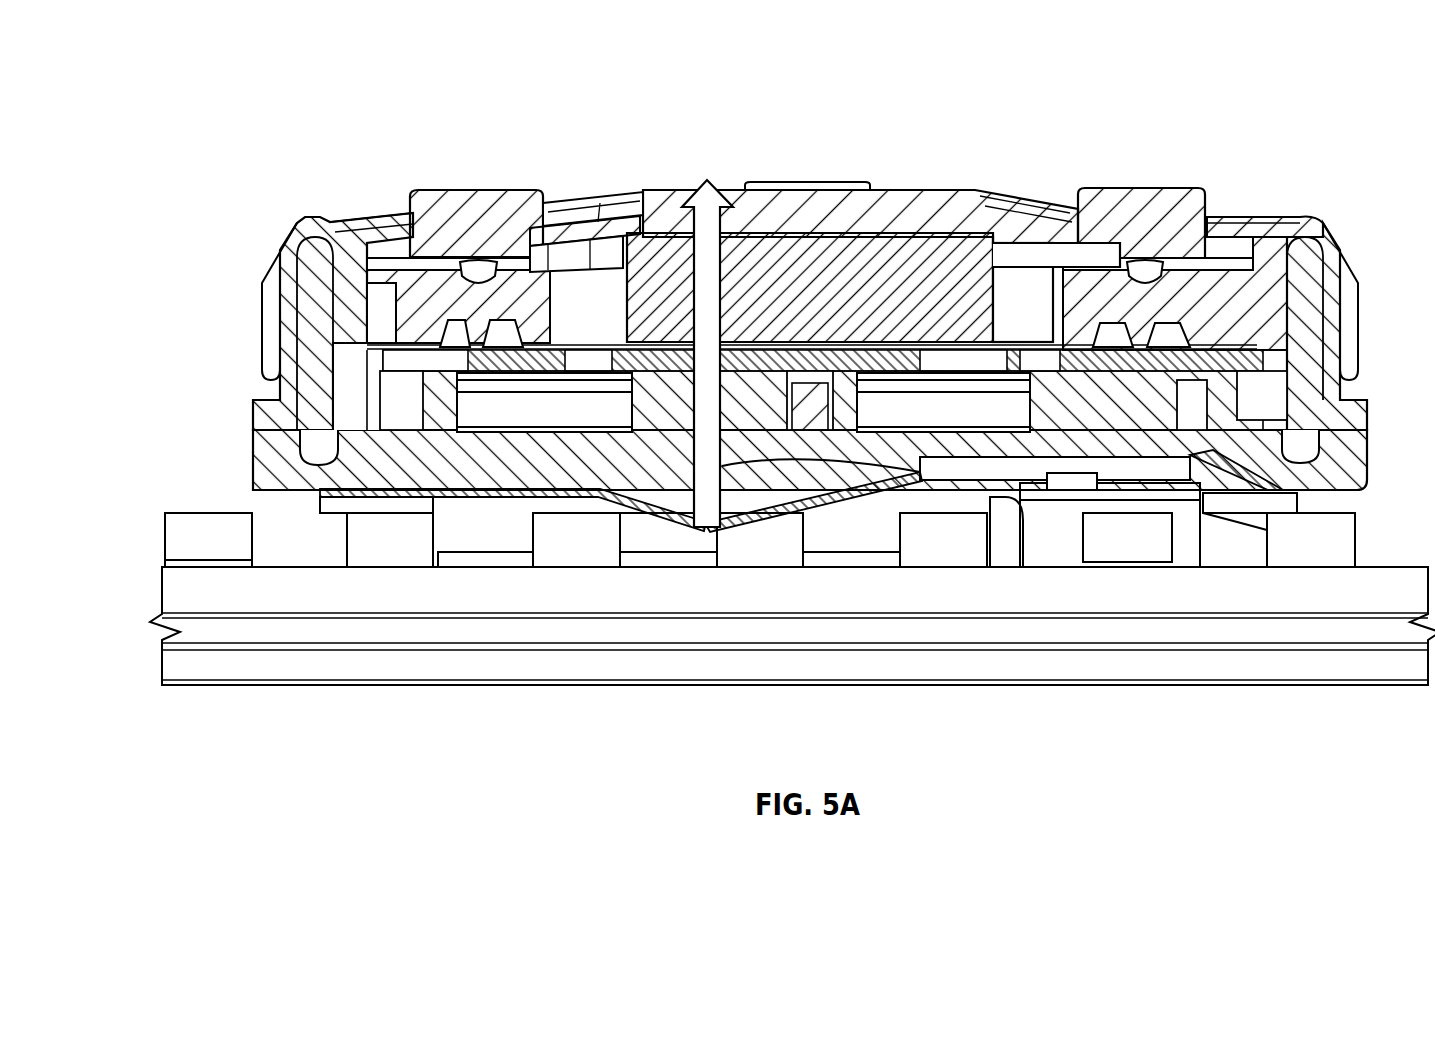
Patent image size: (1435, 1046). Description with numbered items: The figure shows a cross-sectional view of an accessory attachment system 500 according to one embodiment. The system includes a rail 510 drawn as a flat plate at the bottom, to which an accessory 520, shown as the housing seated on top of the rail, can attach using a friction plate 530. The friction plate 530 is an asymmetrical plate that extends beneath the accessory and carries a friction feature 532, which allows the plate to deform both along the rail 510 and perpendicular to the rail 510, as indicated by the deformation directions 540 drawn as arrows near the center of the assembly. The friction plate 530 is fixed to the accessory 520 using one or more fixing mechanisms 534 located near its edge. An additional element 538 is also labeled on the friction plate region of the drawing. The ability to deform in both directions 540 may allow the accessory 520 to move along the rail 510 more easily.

The accessory attachment system 500 is at (299, 140).
The rail 510 is at (173, 596).
The accessory 520 is at (266, 330).
The friction plate 530 is at (328, 500).
The friction feature 532 is at (707, 538).
The fixing mechanism 534 is at (337, 528).
The flexure arm 538 is at (819, 479).
The deformation directions 540 is at (703, 222).